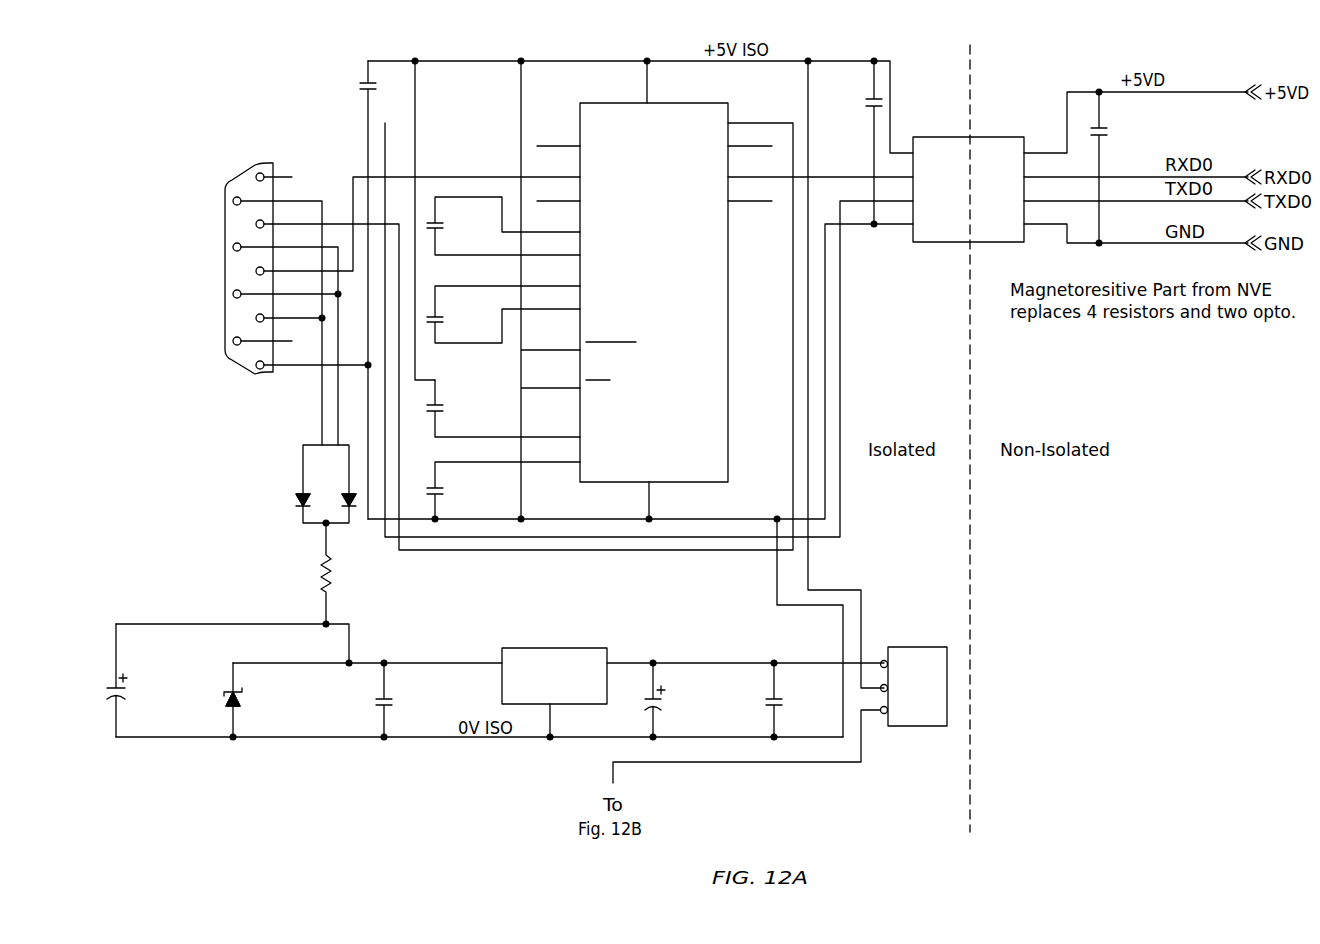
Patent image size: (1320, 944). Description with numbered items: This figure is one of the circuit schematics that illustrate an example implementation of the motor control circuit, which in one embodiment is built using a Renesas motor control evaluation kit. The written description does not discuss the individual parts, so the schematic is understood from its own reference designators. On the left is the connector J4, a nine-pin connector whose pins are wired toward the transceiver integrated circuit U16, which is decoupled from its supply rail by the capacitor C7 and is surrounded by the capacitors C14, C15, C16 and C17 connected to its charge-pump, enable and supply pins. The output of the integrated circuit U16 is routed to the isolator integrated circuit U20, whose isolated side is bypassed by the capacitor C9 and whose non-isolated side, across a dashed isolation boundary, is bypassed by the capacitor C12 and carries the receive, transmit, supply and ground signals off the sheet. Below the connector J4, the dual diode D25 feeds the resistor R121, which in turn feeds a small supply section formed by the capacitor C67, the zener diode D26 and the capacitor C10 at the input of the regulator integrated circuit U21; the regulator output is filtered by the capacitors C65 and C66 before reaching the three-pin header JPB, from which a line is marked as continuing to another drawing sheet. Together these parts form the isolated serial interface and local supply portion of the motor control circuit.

The DB9 connector J4 is at (491, 336).
The 0.1uF capacitor C7 is at (344, 290).
The MAX322/SO20 RS-232 transceiver U16 is at (649, 299).
The 0.1uF charge pump capacitor C14 is at (503, 226).
The 0.1uF charge pump capacitor C15 is at (503, 314).
The 0.1uF capacitor C16 is at (503, 408).
The 0.1uF capacitor C17 is at (503, 490).
The 0.1uF capacitor C9 is at (850, 144).
The IL712 magnetoresistive isolator U20 is at (1073, 181).
The 0.1uF capacitor C12 is at (1125, 168).
The BAS70-05/SOT dual diode D25 is at (264, 486).
The 100E resistor R121 is at (349, 575).
The 10uF/25V capacitor C67 is at (159, 680).
The MM3Z11VT1G zener diode D26 is at (291, 700).
The 0.1uF capacitor C10 is at (410, 700).
The NCV553SQ50T1G voltage regulator U21 is at (681, 670).
The 22uF/16V capacitor C65 is at (696, 700).
The 0.1uF capacitor C66 is at (800, 700).
The HEADER 3 jumper JPB is at (787, 704).